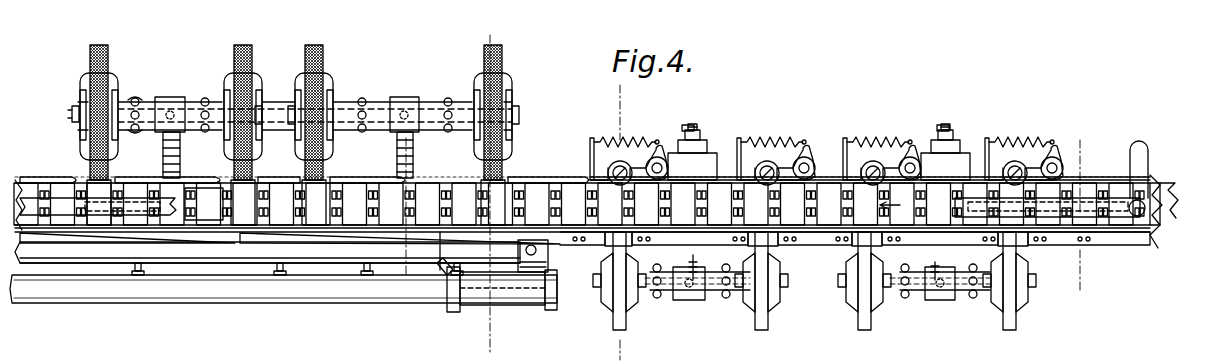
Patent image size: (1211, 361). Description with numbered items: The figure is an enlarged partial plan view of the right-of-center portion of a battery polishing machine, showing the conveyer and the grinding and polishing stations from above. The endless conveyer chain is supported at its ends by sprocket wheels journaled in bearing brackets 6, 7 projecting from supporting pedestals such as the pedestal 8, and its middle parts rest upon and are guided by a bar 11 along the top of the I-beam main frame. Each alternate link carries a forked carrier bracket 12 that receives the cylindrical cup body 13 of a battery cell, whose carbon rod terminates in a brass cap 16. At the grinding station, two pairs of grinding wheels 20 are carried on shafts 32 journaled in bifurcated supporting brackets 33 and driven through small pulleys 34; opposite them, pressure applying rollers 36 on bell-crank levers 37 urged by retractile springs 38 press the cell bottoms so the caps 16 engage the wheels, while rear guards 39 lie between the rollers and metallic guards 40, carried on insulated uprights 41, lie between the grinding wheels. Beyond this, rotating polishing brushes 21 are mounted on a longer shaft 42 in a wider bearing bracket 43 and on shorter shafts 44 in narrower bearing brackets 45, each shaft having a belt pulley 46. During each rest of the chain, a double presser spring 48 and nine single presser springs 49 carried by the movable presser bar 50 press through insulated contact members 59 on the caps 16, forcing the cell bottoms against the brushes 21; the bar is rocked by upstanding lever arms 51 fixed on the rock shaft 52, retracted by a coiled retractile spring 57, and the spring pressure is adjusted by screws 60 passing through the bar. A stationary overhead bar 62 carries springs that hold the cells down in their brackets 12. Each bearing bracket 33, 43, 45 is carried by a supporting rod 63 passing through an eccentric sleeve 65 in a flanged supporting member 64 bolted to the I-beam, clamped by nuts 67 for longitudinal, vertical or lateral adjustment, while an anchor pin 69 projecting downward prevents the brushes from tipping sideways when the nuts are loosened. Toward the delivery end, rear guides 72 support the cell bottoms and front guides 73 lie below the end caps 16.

The bearing bracket 6 is at (611, 355).
The bearing bracket 7 is at (486, 40).
The supporting pedestal 8 is at (399, 151).
The bar 11 is at (1098, 150).
The carrier bracket 12 is at (40, 182).
The cup body 13 is at (556, 186).
The brass cap 16 is at (392, 233).
The grinding wheel 20 is at (613, 290).
The polishing brush 21 is at (92, 54).
The shaft 32 is at (596, 280).
The supporting bracket 33 is at (654, 300).
The pulley 34 is at (688, 302).
The pressure applying roller 36 is at (616, 160).
The bell-crank lever 37 is at (658, 142).
The retractile spring 38 is at (618, 136).
The rear guard 39 is at (537, 158).
The guard 40 is at (680, 244).
The upright 41 is at (644, 243).
The shaft 42 is at (290, 106).
The bearing bracket 43 is at (348, 98).
The shaft 44 is at (74, 112).
The bearing bracket 45 is at (137, 98).
The belt pulley 46 is at (166, 99).
The double presser spring 48 is at (442, 236).
The single presser spring 49 is at (150, 238).
The presser bar 50 is at (85, 257).
The lever arm 51 is at (527, 285).
The rock shaft 52 is at (340, 290).
The retractile spring 57 is at (442, 272).
The contact member 59 is at (228, 240).
The screw 60 is at (138, 272).
The overhead bar 62 is at (1112, 155).
The supporting rod 63 is at (163, 146).
The supporting member 64 is at (712, 172).
The eccentric sleeve 65 is at (708, 152).
The nut 67 is at (700, 137).
The anchor pin 69 is at (695, 290).
The rear guide 72 is at (46, 178).
The front guide 73 is at (196, 238).